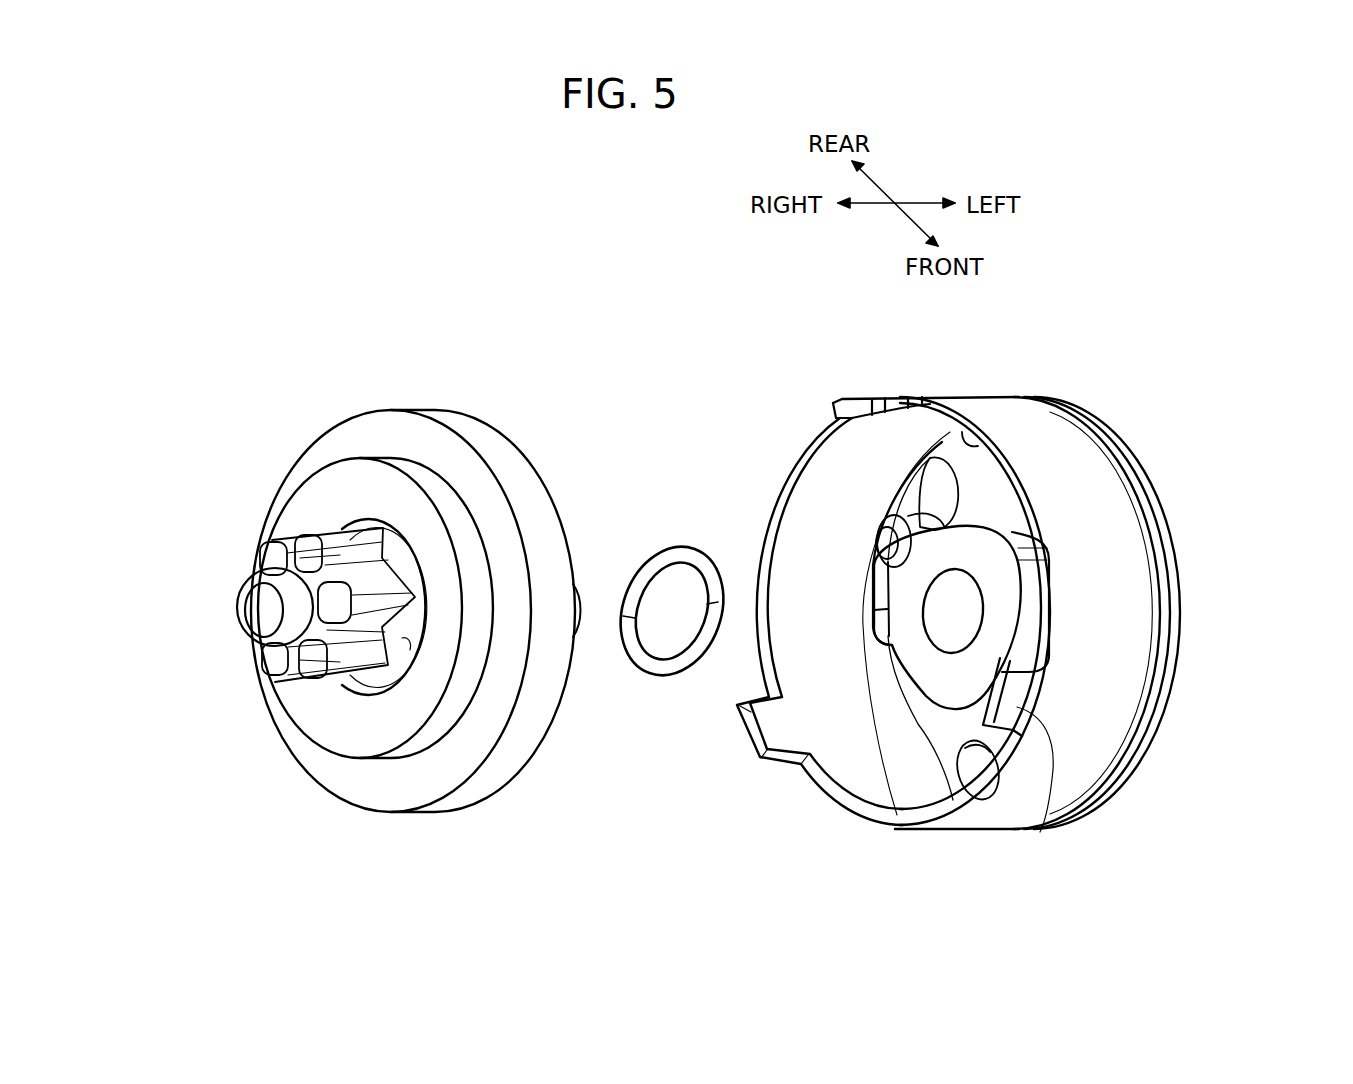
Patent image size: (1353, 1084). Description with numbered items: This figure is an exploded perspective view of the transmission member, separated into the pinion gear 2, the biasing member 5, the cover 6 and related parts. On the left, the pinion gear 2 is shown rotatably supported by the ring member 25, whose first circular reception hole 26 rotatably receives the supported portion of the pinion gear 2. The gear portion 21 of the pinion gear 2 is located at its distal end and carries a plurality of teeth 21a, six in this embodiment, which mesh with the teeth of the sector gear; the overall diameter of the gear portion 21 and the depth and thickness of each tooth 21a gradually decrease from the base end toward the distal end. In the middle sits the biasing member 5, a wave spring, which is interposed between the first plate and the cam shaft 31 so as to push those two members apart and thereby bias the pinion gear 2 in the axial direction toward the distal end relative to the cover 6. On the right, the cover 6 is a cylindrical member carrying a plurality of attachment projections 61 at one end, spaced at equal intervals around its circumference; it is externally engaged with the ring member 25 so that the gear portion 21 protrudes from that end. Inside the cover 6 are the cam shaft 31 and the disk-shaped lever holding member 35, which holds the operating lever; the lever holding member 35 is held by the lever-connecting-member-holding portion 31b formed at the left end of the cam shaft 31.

The pinion gear 2 is at (359, 598).
The biasing member 5 is at (662, 546).
The cover 6 is at (1006, 607).
The gear portion 21 is at (276, 611).
The teeth 21a is at (365, 590).
The ring member 25 is at (385, 409).
The first circular reception hole 26 is at (402, 642).
The cam shaft 31 is at (1075, 716).
The lever-connecting-member-holding portion 31b is at (1040, 604).
The lever holding member 35 is at (990, 484).
The attachment projections 61 is at (884, 398).